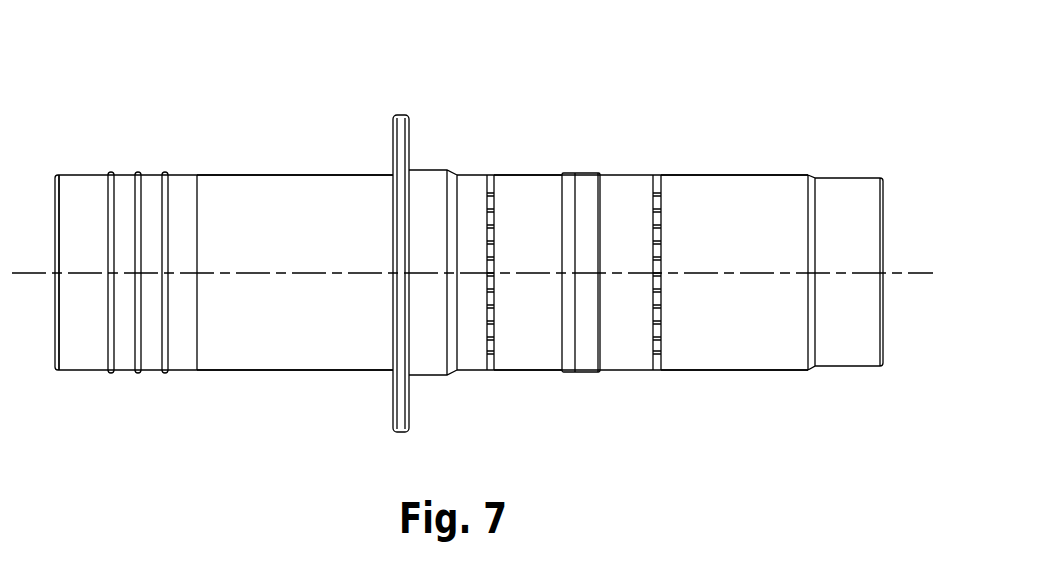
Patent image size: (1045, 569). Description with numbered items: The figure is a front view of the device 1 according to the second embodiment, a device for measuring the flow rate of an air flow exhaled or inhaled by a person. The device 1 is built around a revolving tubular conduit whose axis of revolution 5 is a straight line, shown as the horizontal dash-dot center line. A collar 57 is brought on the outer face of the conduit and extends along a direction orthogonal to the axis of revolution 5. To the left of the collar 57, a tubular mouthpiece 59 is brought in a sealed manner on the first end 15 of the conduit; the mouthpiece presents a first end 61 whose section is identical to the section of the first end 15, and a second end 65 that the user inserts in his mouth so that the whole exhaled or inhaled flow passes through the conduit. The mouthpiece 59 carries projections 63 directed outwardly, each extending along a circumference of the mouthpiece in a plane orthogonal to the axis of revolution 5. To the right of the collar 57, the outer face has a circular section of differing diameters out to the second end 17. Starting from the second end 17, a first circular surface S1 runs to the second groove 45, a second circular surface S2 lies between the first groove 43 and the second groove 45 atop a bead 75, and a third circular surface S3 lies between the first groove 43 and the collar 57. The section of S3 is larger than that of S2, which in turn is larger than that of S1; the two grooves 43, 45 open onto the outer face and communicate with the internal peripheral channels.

The device 1 is at (308, 110).
The axis of revolution 5 is at (320, 278).
The first end 15 is at (212, 311).
The first end 61 is at (200, 345).
The second end 17 is at (897, 340).
The first groove 43 is at (493, 170).
The second groove 45 is at (657, 172).
The collar 57 is at (401, 108).
The tubular mouthpiece 59 is at (87, 353).
The projections 63 is at (111, 171).
The second end 65 is at (53, 345).
The bead 75 is at (583, 348).
The first circular surface S1 is at (732, 172).
The second circular surface S2 is at (588, 172).
The third circular surface S3 is at (440, 167).